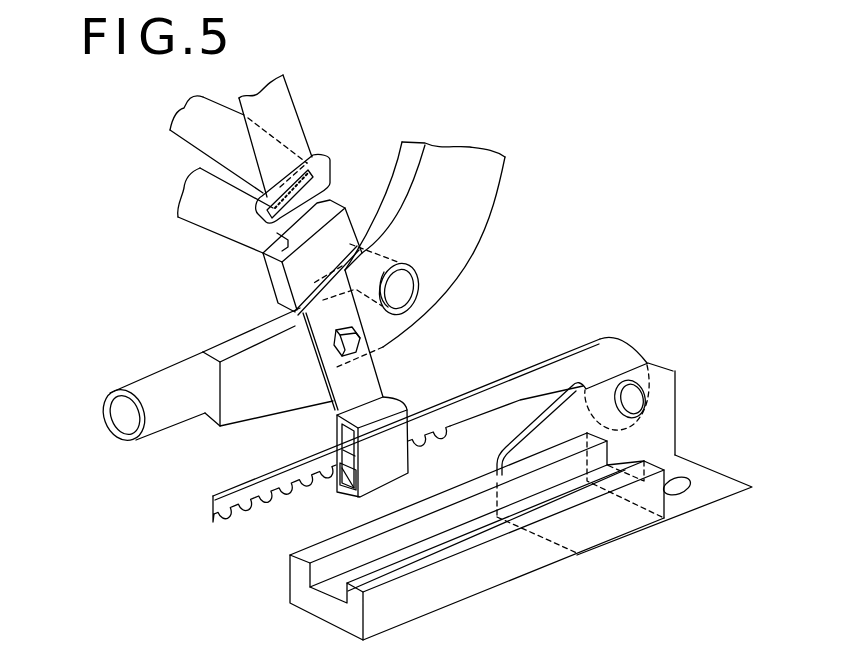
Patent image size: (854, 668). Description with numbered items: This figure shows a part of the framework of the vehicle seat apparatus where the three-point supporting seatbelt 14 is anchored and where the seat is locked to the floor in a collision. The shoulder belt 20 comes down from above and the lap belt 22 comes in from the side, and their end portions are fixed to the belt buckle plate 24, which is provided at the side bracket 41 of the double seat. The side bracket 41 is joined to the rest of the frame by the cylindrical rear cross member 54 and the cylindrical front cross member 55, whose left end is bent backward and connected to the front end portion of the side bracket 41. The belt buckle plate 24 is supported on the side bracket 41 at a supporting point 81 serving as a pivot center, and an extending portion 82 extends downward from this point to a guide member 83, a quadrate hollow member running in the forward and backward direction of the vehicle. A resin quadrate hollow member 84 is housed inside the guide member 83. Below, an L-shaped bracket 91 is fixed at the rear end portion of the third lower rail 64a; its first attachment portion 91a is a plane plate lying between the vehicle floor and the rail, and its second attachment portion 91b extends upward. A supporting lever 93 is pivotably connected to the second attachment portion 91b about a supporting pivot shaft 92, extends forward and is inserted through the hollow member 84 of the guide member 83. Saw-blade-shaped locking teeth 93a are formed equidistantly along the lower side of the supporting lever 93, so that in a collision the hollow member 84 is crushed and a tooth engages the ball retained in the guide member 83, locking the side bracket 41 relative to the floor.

The three-point supporting seatbelt 14 is at (341, 95).
The shoulder belt 20 is at (303, 128).
The lap belt 22 is at (170, 140).
The rear cross member 54 is at (219, 236).
The belt buckle plate 24 is at (297, 323).
The side bracket 41 is at (475, 212).
The front cross member 55 is at (168, 421).
The supporting point 81 is at (343, 358).
The extending portion 82 is at (377, 377).
The guide member 83 is at (403, 460).
The quadrate hollow member 84 is at (347, 481).
The supporting lever 93 is at (568, 363).
The locking teeth 93a is at (268, 505).
The L-shaped bracket 91 is at (644, 459).
The first attachment portion 91a is at (700, 470).
The second attachment portion 91b is at (667, 407).
The supporting pivot shaft 92 is at (640, 398).
The third lower rail 64a is at (493, 583).